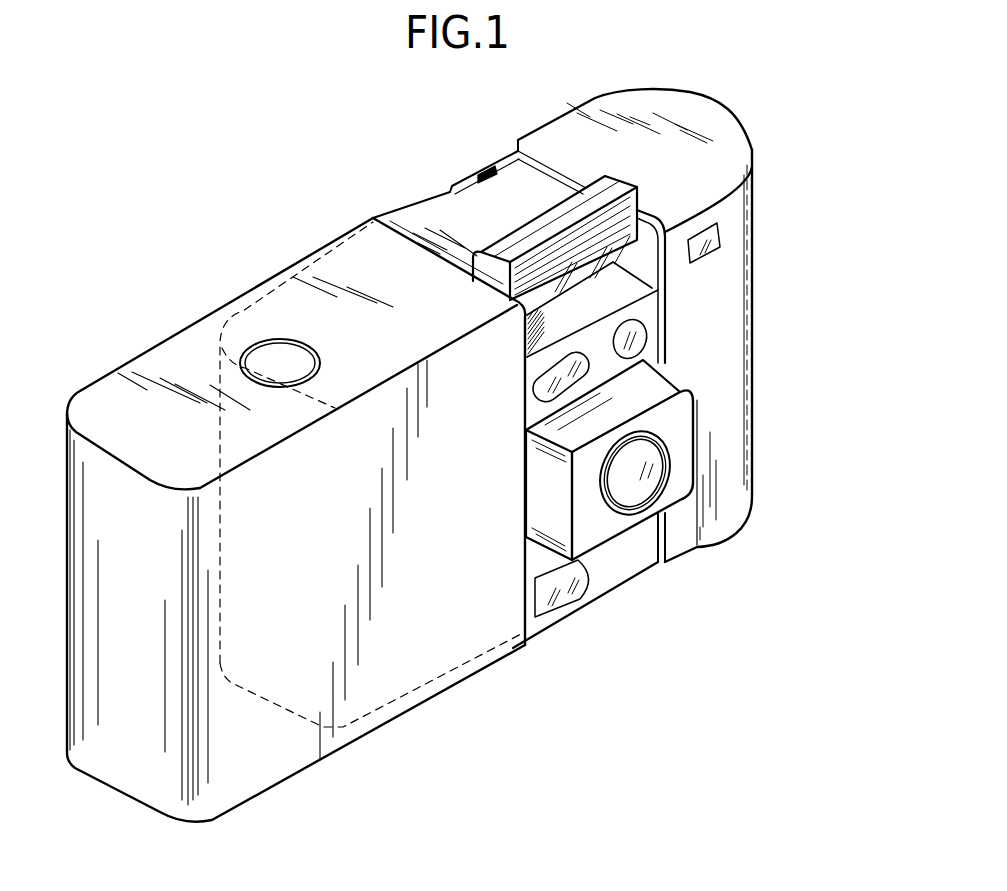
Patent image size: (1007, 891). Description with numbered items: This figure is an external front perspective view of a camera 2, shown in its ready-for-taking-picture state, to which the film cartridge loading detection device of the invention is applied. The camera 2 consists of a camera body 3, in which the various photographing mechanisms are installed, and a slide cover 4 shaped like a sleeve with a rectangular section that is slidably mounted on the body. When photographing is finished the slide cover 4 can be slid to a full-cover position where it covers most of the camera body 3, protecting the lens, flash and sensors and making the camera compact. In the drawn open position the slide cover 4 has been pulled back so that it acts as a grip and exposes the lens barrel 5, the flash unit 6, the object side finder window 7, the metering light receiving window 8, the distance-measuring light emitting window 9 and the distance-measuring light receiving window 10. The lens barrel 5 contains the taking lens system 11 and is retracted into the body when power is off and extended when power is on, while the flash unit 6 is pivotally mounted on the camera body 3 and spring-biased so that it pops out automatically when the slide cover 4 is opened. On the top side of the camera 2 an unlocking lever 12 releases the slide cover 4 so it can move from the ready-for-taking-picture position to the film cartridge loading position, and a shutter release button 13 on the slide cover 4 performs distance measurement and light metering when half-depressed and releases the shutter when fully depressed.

The camera 2 is at (748, 115).
The camera body 3 is at (722, 354).
The slide cover 4 is at (267, 757).
The lens barrel 5 is at (664, 506).
The flash unit 6 is at (640, 212).
The object side finder window 7 is at (717, 237).
The metering light receiving window 8 is at (543, 399).
The distance-measuring light emitting window 9 is at (645, 339).
The distance-measuring light receiving window 10 is at (550, 598).
The taking lens system 11 is at (620, 493).
The unlocking lever 12 is at (477, 176).
The shutter release button 13 is at (273, 360).